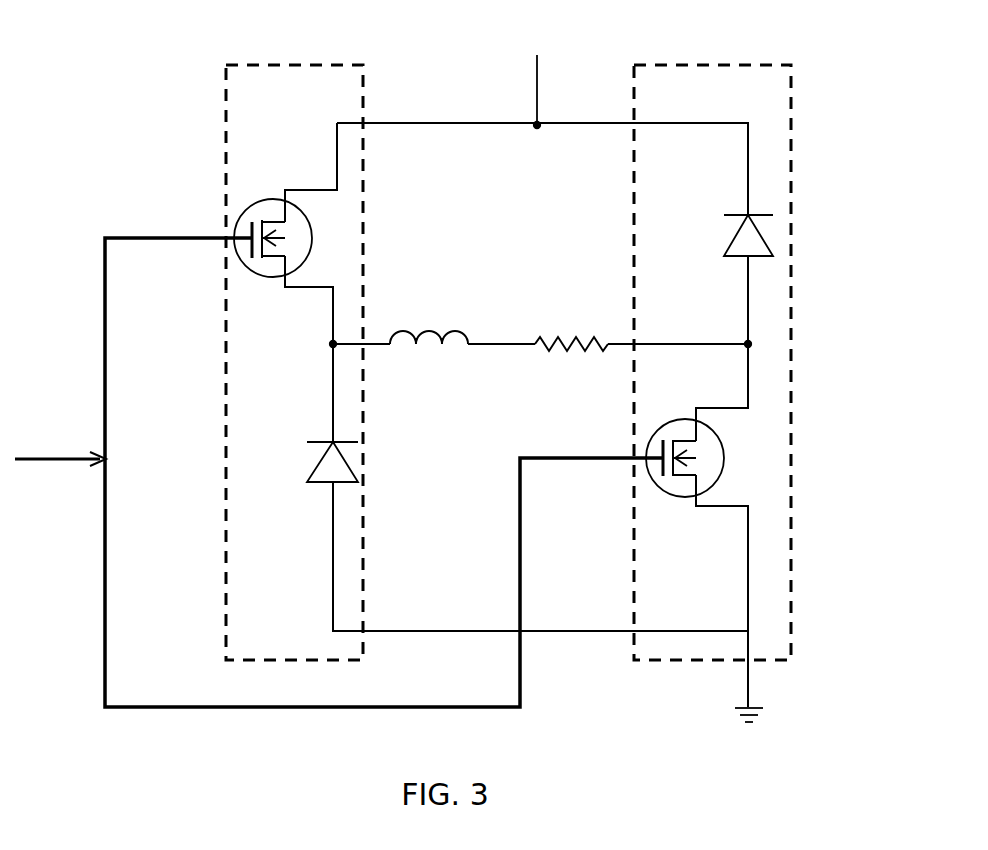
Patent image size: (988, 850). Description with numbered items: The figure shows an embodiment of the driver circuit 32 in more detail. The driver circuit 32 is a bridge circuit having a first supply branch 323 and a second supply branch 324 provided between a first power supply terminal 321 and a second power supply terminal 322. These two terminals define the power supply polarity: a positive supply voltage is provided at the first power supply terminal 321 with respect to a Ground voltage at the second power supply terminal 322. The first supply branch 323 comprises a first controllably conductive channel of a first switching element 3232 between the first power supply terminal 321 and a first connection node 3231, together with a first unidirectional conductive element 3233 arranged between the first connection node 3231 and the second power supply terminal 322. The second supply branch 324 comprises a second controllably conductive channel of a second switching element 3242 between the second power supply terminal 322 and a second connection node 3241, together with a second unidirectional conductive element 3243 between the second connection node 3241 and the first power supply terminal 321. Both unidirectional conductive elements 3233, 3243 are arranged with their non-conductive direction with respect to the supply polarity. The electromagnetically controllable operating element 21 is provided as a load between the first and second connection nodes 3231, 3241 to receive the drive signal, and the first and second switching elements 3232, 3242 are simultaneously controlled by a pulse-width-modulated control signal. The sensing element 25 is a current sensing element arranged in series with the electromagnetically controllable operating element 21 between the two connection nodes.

The driver circuit 32 is at (832, 632).
The first power supply terminal 321 is at (559, 92).
The second power supply terminal 322 is at (760, 715).
The first supply branch 323 is at (270, 109).
The second supply branch 324 is at (687, 109).
The first connection node 3231 is at (310, 350).
The first switching element 3232 is at (232, 272).
The first unidirectional conductive element 3233 is at (280, 472).
The second connection node 3241 is at (775, 344).
The second switching element 3242 is at (752, 458).
The second unidirectional conductive element 3243 is at (778, 282).
The electromagnetically controllable operating element 21 is at (430, 312).
The sensing element 25 is at (573, 310).